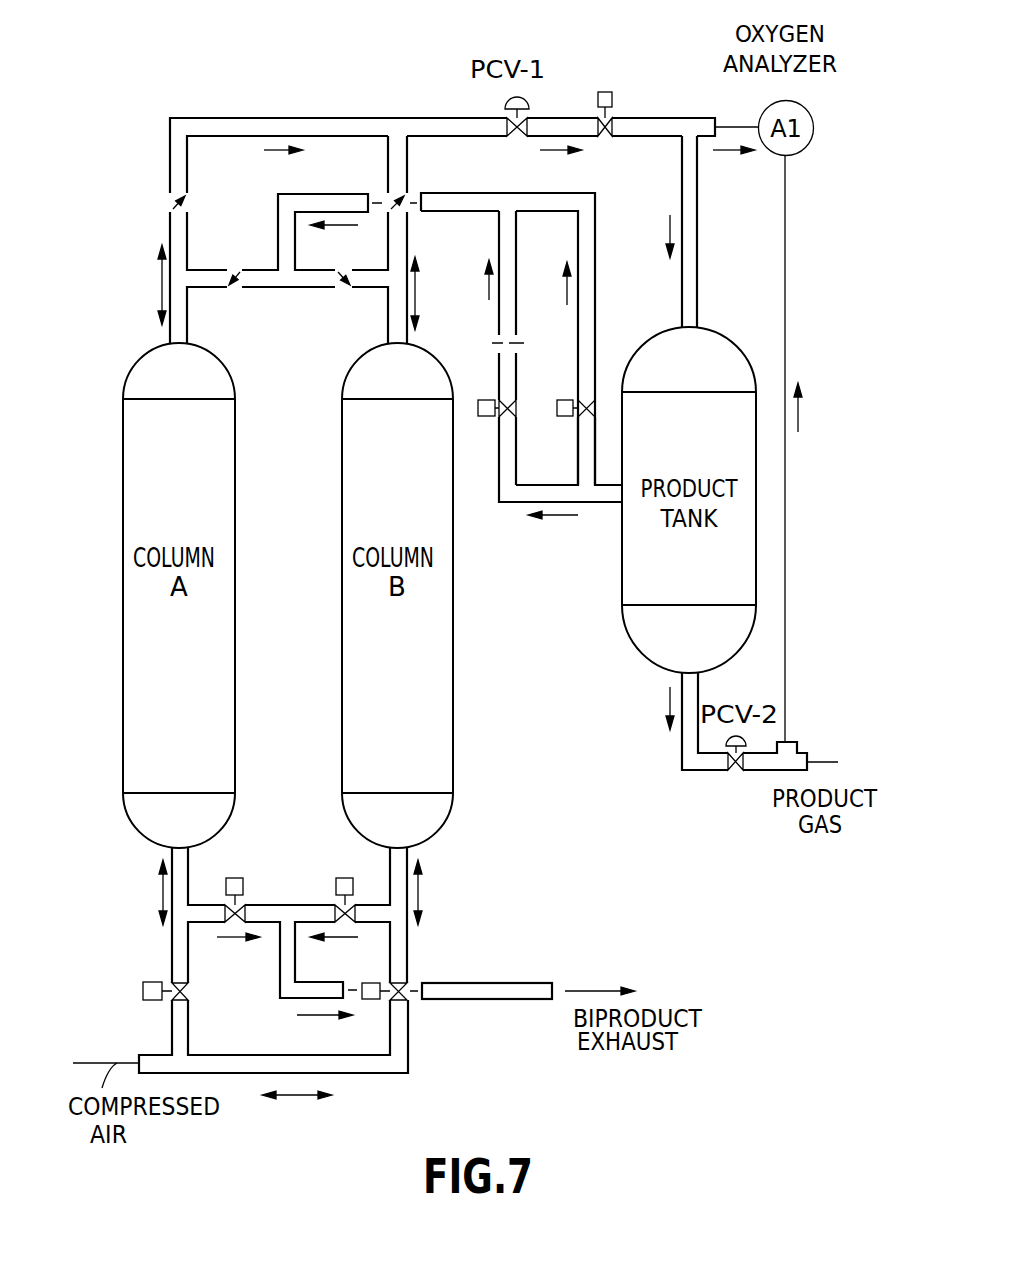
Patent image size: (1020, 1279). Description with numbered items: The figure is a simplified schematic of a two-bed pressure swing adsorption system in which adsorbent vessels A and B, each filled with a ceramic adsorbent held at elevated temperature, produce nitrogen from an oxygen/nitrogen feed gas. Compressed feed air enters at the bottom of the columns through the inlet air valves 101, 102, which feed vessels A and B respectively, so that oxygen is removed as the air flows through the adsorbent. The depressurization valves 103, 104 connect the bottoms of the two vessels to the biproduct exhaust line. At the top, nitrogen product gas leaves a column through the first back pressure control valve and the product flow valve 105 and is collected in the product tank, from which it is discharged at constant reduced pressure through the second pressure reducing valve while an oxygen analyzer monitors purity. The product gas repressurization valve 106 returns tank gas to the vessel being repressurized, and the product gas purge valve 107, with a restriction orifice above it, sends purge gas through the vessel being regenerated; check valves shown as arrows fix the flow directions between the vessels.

The inlet air valve 101 is at (147, 982).
The inlet air valve 102 is at (362, 983).
The depressurization valve 103 is at (235, 878).
The depressurization valve 104 is at (345, 878).
The product flow valve 105 is at (605, 92).
The product gas repressurization valve 106 is at (560, 400).
The product gas purge valve 107 is at (486, 400).